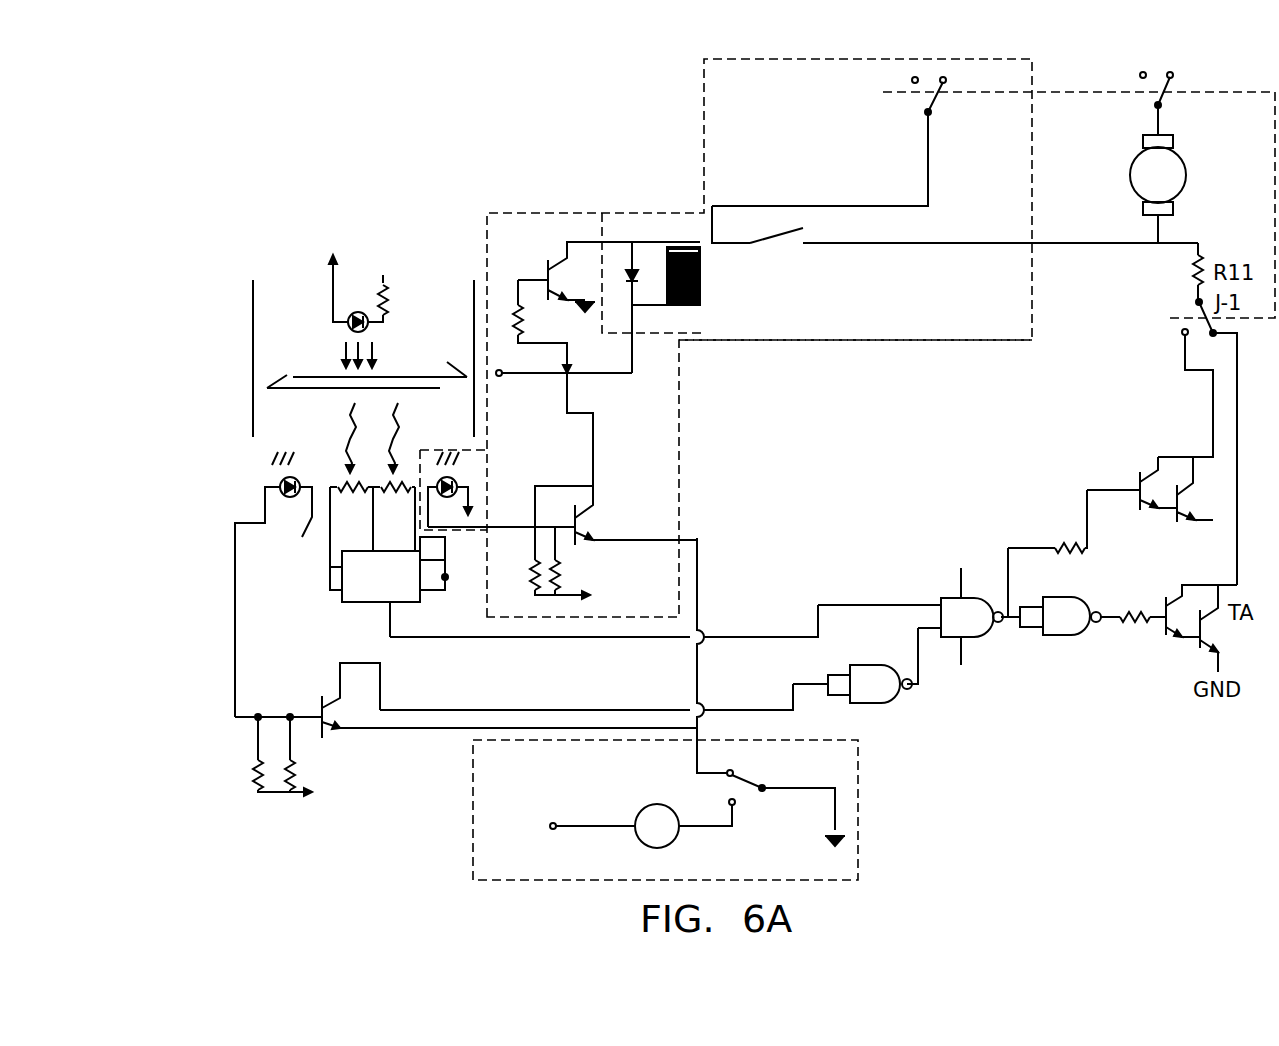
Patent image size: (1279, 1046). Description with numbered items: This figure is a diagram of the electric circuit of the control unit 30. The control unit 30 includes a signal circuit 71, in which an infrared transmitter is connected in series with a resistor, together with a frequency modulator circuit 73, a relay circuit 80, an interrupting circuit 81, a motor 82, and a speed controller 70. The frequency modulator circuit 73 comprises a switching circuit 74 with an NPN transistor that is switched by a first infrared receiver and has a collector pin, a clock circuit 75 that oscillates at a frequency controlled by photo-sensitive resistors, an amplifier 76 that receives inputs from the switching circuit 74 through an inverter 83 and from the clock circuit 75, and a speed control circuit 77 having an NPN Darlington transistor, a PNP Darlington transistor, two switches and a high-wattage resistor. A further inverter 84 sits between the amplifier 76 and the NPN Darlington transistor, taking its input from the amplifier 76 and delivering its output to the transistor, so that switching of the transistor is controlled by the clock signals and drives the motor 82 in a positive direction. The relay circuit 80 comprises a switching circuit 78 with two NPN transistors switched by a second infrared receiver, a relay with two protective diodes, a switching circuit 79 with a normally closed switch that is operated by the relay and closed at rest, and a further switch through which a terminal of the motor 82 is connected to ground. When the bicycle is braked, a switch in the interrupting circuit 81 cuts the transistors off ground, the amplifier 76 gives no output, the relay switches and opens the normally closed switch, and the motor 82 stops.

The control unit 30 is at (666, 167).
The speed controller 70 is at (228, 368).
The signal circuit 71 is at (347, 212).
The frequency modulator circuit 73 is at (428, 770).
The switching circuit 74 is at (237, 740).
The clock circuit 75 is at (290, 577).
The amplifier 76 is at (897, 593).
The speed control circuit 77 is at (1117, 538).
The switching circuit 78 is at (653, 447).
The switching circuit 79 is at (837, 332).
The relay circuit 80 is at (524, 191).
The interrupting circuit 81 is at (820, 865).
The motor 82 is at (1117, 175).
The inverter 83 is at (883, 702).
The inverter 84 is at (1067, 632).